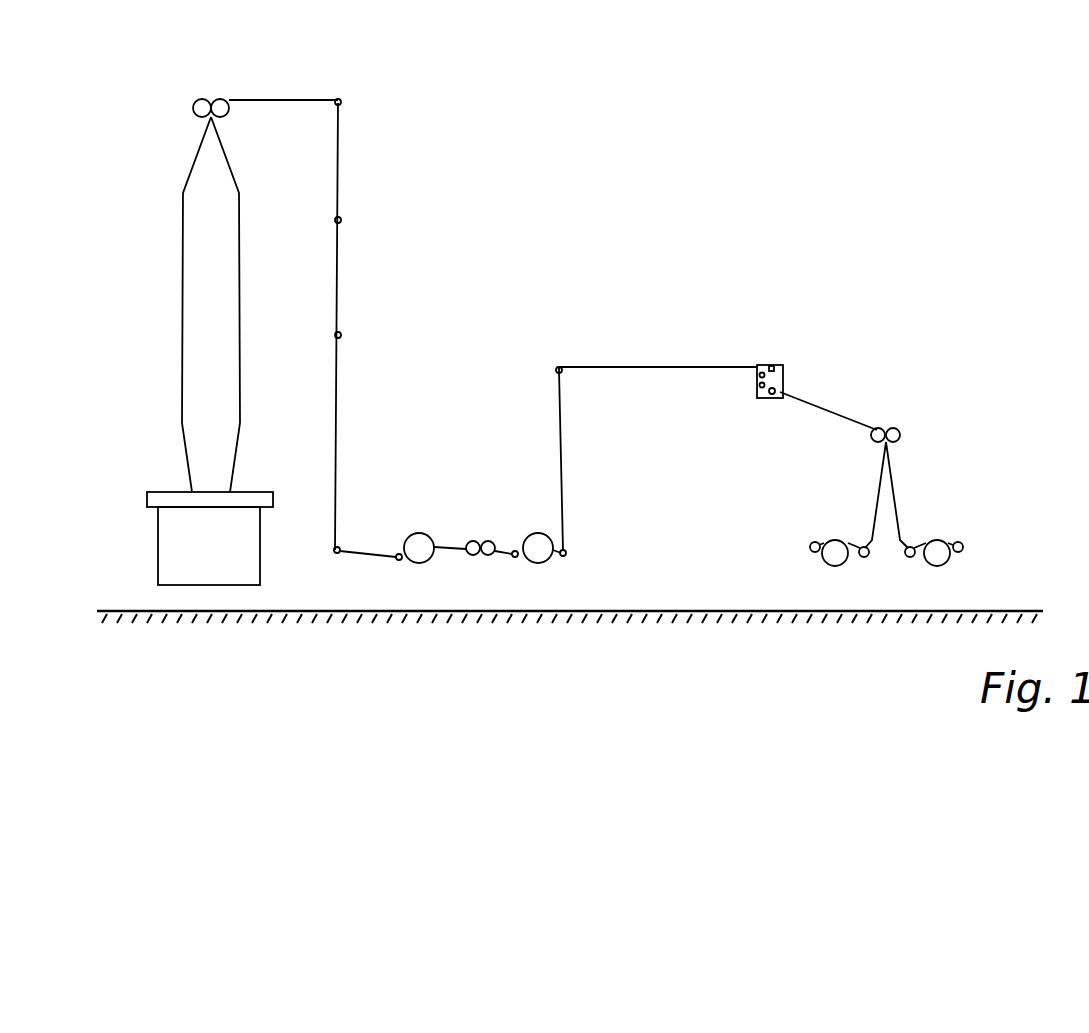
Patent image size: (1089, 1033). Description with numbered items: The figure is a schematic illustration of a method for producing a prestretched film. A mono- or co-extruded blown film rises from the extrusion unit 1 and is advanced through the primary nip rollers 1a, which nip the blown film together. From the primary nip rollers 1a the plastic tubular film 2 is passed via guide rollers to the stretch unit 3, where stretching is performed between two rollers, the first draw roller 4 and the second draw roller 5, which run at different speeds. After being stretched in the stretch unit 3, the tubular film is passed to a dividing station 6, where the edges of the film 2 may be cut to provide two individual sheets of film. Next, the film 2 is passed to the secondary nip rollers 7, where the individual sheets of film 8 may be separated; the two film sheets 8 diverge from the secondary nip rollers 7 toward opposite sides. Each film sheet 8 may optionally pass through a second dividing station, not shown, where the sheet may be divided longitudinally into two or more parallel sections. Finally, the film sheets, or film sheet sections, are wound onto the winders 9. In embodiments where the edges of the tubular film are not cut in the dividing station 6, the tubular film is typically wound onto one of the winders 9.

The spinning can / sliver supply 1 is at (158, 545).
The primary nip rollers 1a is at (193, 103).
The plastic tubular film 2 is at (340, 188).
The stretch unit 3 is at (518, 468).
The first draw roller 4 is at (418, 556).
The second draw roller 5 is at (540, 553).
The dividing station 6 is at (757, 392).
The secondary nip rollers 7 is at (904, 433).
The film sheets 8 is at (882, 495).
The winders 9 is at (834, 559).